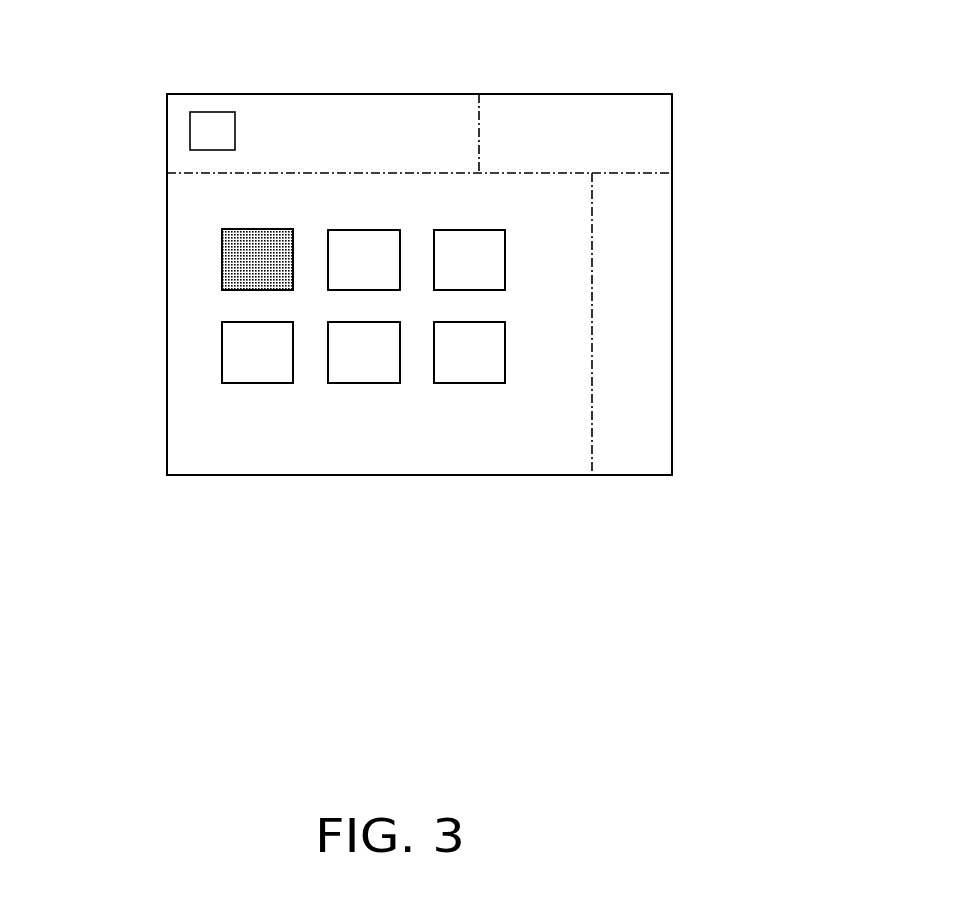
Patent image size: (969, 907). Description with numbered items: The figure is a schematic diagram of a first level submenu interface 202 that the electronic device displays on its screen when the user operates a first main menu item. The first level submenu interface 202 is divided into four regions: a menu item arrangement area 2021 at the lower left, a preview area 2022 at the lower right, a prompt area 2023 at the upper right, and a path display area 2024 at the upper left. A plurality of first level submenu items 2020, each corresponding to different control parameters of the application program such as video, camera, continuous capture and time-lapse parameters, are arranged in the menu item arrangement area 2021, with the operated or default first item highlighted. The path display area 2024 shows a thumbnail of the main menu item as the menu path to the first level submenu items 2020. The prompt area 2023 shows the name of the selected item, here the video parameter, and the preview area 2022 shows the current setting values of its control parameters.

The first level submenu interface 202 is at (236, 50).
The first level submenu items 2020 is at (222, 268).
The menu item arrangement area 2021 is at (193, 428).
The preview area 2022 is at (657, 440).
The prompt area 2023 is at (643, 132).
The path display area 2024 is at (357, 122).